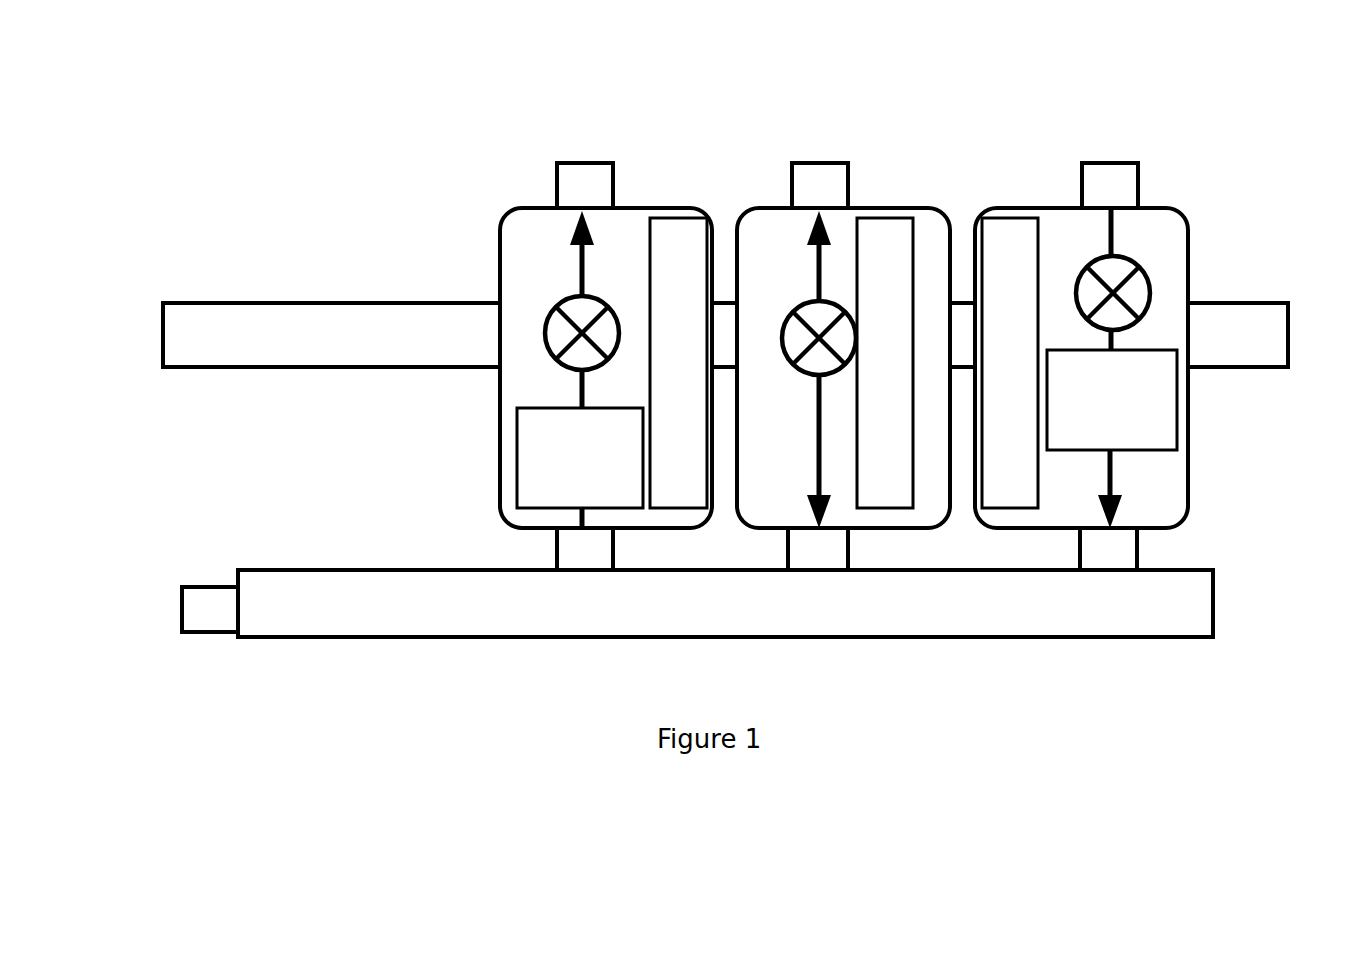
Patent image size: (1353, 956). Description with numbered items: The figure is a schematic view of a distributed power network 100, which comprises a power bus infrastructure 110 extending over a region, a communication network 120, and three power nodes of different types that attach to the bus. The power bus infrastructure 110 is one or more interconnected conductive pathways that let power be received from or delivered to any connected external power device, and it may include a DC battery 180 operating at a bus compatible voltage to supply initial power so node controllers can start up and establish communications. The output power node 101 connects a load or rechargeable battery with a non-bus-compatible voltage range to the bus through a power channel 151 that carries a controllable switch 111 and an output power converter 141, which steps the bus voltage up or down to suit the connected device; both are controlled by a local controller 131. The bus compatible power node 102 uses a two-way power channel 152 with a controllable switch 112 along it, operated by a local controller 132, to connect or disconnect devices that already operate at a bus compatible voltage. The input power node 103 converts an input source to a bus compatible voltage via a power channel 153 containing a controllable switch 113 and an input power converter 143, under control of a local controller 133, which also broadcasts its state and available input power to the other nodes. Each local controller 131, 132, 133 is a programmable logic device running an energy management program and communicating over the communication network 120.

The distributed power network 100 is at (262, 72).
The power bus infrastructure 110 is at (895, 637).
The communication network 120 is at (295, 302).
The DC battery 180 is at (210, 609).
The output power node 101 is at (512, 210).
The bus compatible power node 102 is at (752, 208).
The input power node 103 is at (1185, 217).
The controllable switch 111 is at (549, 311).
The controllable switch 112 is at (807, 304).
The controllable switch 113 is at (1148, 276).
The local controller 131 is at (676, 218).
The local controller 132 is at (900, 218).
The local controller 133 is at (1008, 218).
The output power converter 141 is at (517, 458).
The input power converter 143 is at (1177, 413).
The power channel 151 is at (578, 283).
The two-way power channel 152 is at (818, 258).
The power channel 153 is at (1112, 238).